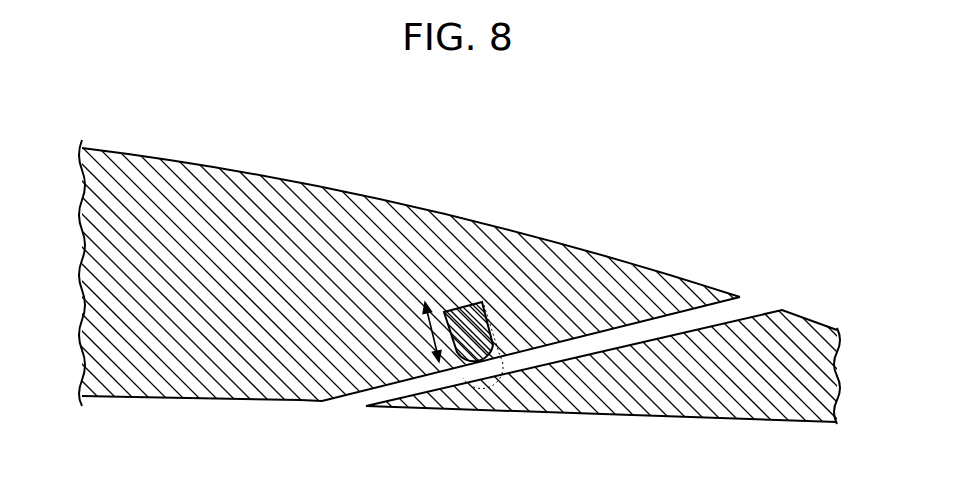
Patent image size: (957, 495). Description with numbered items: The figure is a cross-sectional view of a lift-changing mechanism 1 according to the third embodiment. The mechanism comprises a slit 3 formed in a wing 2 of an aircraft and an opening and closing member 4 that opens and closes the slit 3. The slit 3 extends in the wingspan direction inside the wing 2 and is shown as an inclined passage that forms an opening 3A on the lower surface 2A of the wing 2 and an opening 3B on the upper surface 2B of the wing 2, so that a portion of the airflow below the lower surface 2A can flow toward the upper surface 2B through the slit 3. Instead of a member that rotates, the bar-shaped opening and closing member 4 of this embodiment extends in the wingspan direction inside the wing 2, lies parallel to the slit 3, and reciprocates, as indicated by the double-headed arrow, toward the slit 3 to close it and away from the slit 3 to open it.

The lift-changing mechanism 1 is at (589, 219).
The wing 2 is at (163, 137).
The lower surface 2A is at (153, 396).
The upper surface 2B is at (262, 177).
The slit 3 is at (530, 362).
The opening 3A is at (351, 410).
The opening 3B is at (757, 300).
The opening and closing member 4 is at (473, 350).